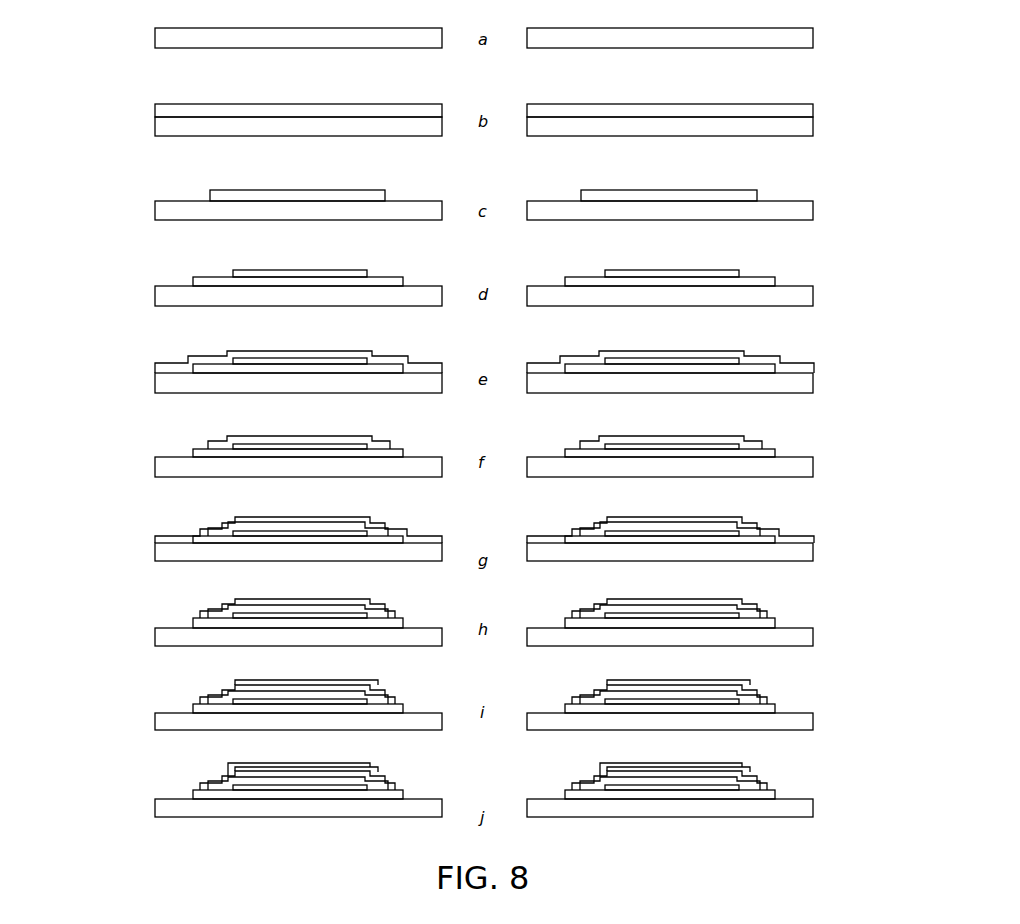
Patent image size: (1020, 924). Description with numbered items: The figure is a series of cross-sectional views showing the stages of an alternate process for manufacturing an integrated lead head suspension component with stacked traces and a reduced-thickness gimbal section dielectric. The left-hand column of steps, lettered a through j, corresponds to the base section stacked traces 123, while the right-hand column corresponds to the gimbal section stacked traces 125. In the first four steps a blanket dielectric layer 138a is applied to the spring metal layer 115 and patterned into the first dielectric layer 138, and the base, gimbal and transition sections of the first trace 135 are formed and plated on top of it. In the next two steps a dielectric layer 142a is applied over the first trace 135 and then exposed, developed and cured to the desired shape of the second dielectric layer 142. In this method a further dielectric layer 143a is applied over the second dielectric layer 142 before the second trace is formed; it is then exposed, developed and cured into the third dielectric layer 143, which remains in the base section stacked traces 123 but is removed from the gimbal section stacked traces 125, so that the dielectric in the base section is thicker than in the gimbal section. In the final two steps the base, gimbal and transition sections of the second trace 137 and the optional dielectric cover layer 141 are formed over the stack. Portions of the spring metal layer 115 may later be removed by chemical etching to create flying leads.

The spring metal layer 115 is at (153, 30).
The dielectric layer 138a is at (215, 104).
The first dielectric layer 138 is at (250, 190).
The first trace 135 is at (265, 270).
The dielectric layer 142a is at (188, 356).
The second dielectric layer 142 is at (220, 441).
The dielectric layer 143a is at (190, 527).
The third dielectric layer 143 is at (290, 517).
The second trace 137 is at (303, 680).
The dielectric cover layer 141 is at (368, 763).
The base section stacked traces 123 is at (193, 754).
The gimbal section stacked traces 125 is at (560, 777).